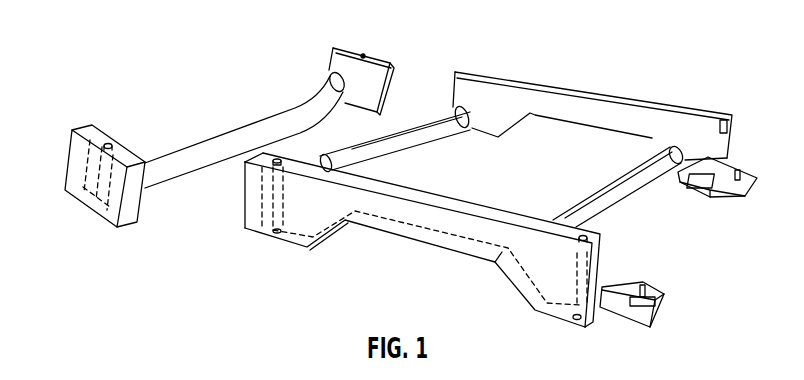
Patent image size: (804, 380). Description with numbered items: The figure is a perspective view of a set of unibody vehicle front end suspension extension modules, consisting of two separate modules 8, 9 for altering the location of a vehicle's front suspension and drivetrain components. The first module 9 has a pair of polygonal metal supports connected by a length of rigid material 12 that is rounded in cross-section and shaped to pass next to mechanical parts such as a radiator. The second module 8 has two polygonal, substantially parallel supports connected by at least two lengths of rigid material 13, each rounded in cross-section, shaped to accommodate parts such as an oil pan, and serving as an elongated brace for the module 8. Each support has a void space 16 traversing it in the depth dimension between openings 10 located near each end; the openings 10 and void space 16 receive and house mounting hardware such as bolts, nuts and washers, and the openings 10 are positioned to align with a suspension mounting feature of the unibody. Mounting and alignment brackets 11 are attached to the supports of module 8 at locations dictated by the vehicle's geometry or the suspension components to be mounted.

The second module 8 is at (674, 40).
The module 9 is at (164, 65).
The opening 10 is at (110, 144).
The mounting and/or alignment bracket 11 is at (729, 168).
The length of rigid material 12 is at (172, 172).
The length of rigid material 13 is at (408, 141).
The void space 16 is at (88, 176).